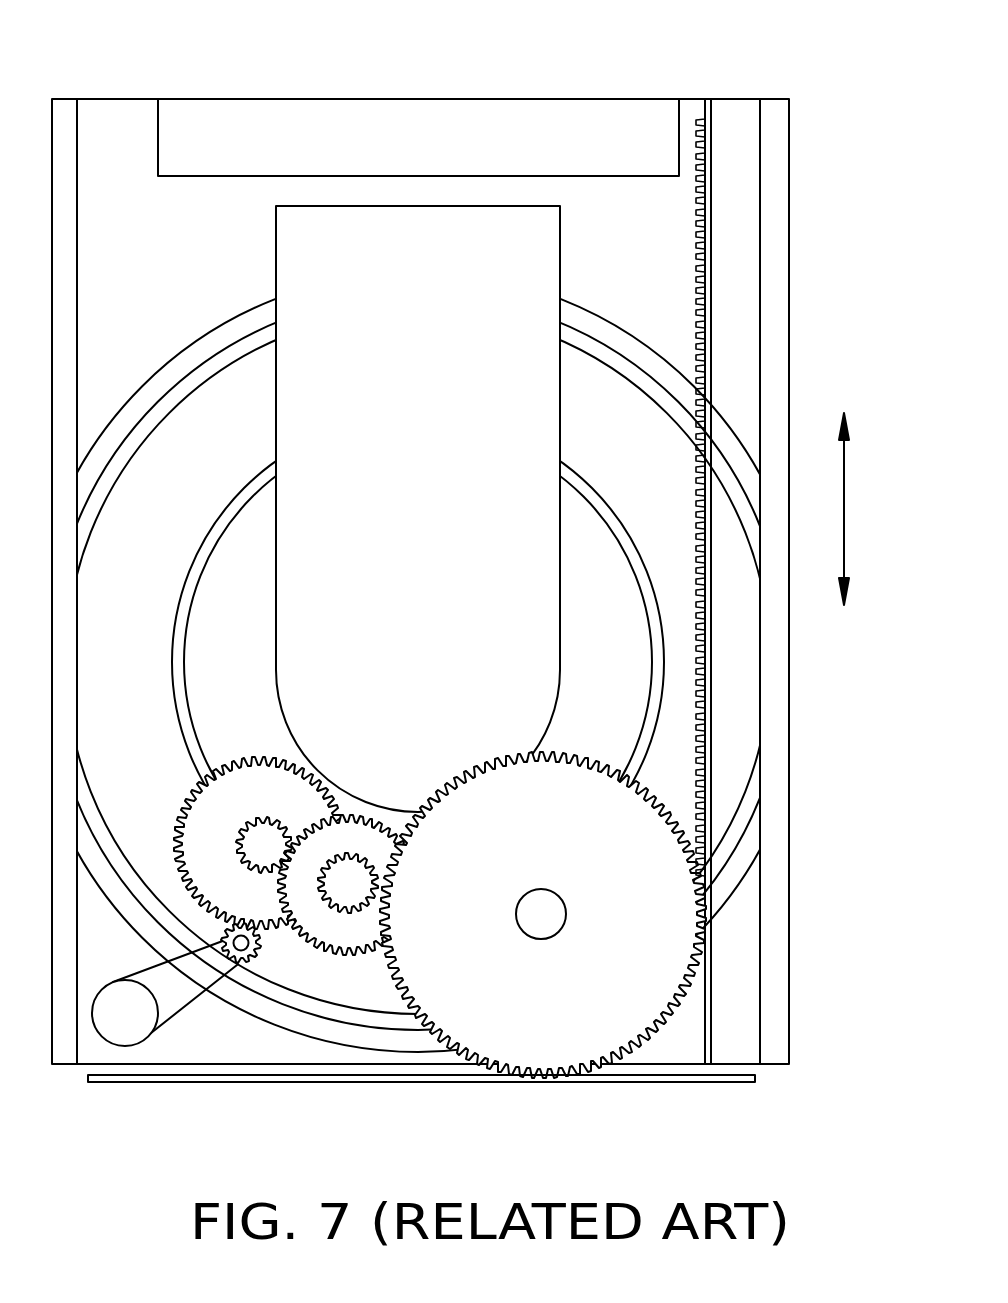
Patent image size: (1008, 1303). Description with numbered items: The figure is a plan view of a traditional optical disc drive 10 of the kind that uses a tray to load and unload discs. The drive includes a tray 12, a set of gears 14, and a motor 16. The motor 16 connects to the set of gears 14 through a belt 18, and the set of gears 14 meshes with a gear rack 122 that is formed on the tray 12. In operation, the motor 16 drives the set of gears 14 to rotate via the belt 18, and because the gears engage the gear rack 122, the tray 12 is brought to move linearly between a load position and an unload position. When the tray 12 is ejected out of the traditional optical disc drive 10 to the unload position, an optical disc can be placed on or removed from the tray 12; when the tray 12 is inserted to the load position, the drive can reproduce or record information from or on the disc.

The traditional optical disc drive 10 is at (474, 53).
The tray 12 is at (775, 908).
The gear rack 122 is at (705, 663).
The set of gears 14 is at (272, 930).
The motor 16 is at (125, 1027).
The belt 18 is at (190, 999).